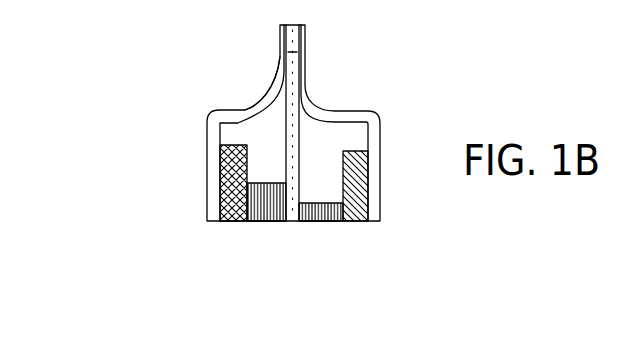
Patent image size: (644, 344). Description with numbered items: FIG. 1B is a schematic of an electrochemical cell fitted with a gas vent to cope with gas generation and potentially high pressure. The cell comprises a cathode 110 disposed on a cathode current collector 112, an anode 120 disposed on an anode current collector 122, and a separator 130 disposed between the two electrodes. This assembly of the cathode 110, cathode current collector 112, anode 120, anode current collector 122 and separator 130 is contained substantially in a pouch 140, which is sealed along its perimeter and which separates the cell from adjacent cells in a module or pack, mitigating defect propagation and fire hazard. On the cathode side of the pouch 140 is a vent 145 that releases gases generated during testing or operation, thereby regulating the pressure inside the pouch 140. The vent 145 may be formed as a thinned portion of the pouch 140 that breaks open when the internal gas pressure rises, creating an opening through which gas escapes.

The cathode 110 is at (268, 222).
The cathode current collector 112 is at (235, 222).
The anode 120 is at (320, 222).
The anode current collector 122 is at (358, 222).
The separator 130 is at (300, 130).
The pouch 140 is at (207, 137).
The vent 145 is at (228, 92).